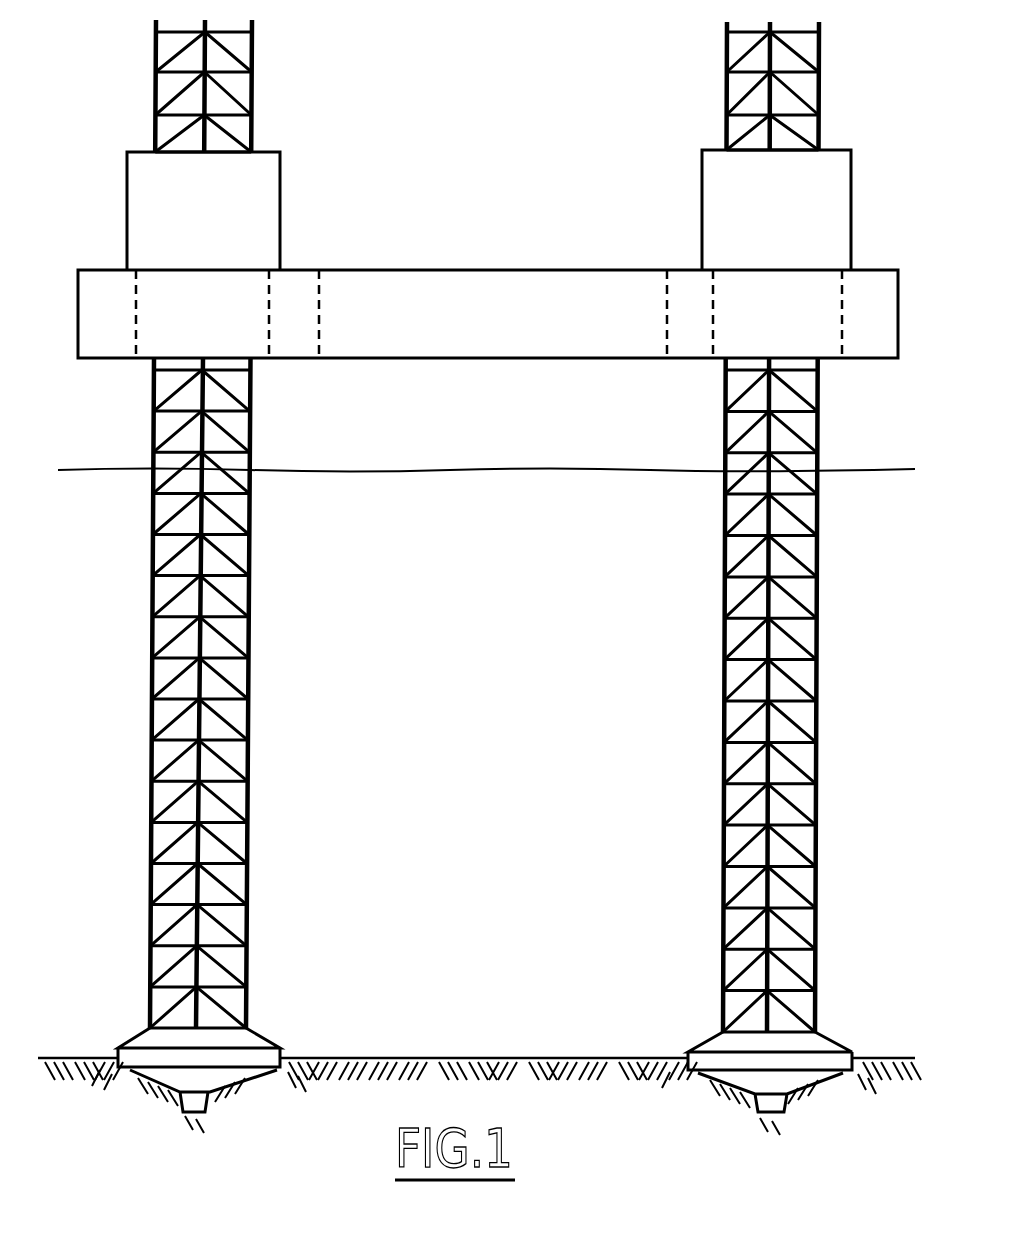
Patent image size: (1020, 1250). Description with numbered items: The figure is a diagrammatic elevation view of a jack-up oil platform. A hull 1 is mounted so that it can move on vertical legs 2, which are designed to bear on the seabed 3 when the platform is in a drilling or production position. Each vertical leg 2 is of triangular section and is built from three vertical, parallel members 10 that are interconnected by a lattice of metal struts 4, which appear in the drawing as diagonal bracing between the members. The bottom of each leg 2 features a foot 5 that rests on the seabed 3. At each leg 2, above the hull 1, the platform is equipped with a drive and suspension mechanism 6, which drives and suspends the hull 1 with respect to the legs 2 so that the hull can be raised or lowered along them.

The hull 1 is at (490, 296).
The vertical leg 2 is at (475, 526).
The seabed 3 is at (480, 1058).
The metal struts 4 is at (168, 430).
The foot 5 is at (220, 1078).
The drive and suspension mechanism 6 is at (133, 205).
The vertical parallel members 10 is at (163, 642).